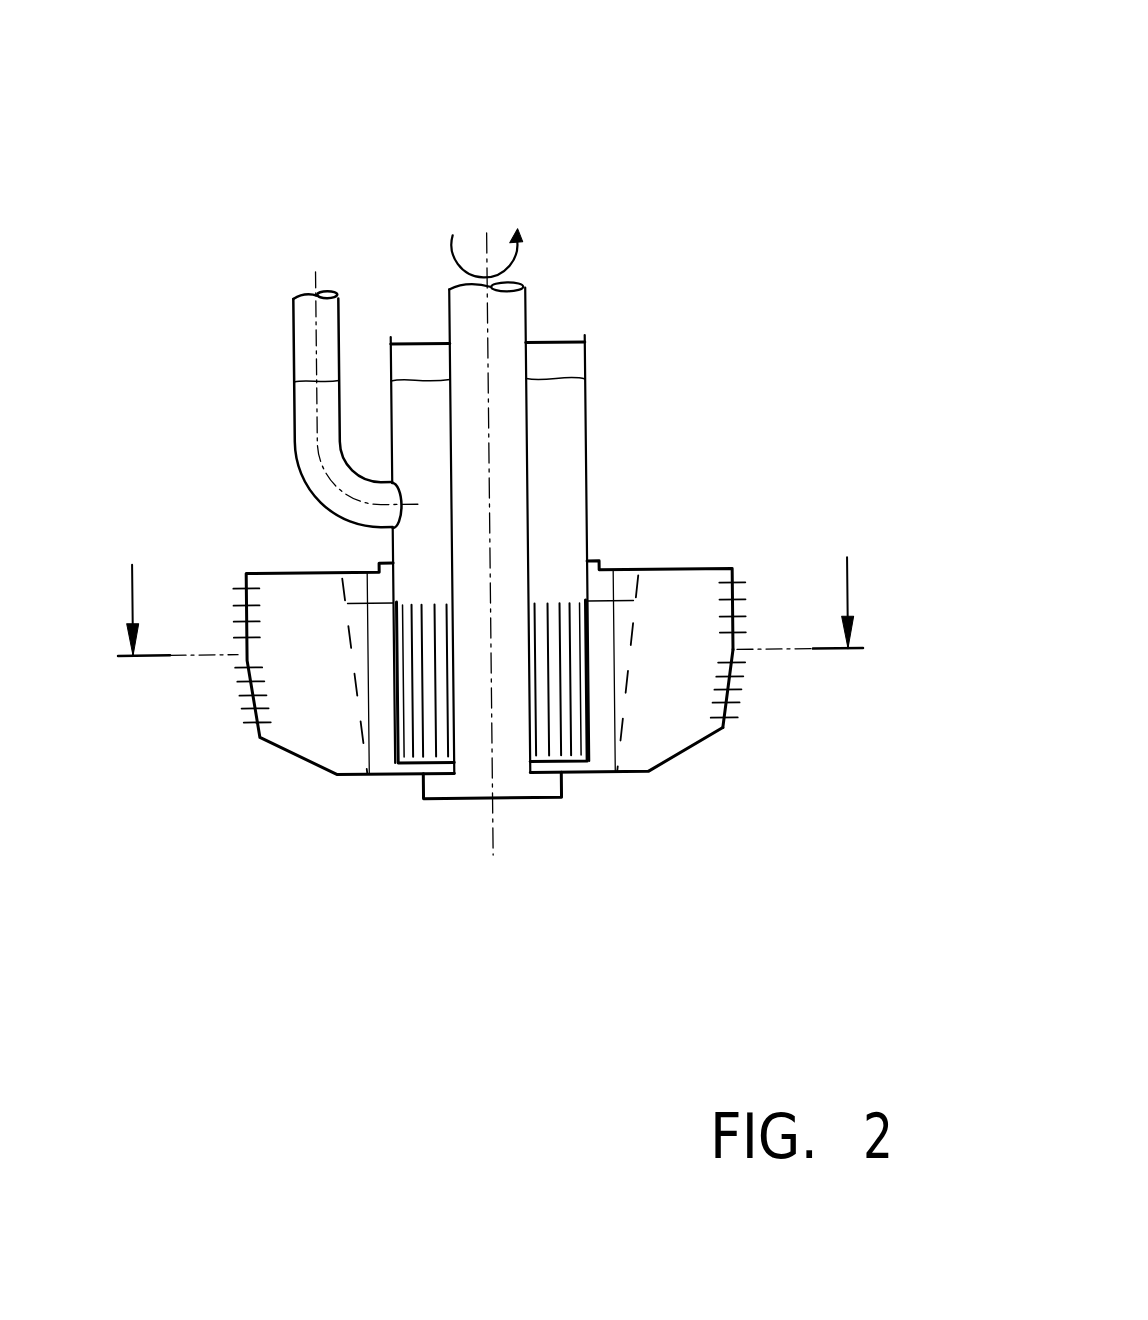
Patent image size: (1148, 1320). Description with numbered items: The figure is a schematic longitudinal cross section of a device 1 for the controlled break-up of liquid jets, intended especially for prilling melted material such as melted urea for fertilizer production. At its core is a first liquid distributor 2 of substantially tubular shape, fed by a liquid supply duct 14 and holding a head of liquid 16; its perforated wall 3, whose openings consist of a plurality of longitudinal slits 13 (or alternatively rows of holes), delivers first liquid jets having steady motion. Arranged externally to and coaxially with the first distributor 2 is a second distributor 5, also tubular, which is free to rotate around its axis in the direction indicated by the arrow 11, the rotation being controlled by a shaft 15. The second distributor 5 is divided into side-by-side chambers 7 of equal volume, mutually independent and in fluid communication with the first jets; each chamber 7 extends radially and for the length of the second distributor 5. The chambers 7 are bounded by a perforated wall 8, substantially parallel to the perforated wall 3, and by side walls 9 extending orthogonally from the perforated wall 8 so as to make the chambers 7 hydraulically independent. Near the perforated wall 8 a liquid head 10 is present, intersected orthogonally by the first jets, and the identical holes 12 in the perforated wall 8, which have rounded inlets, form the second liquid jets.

The device for the controlled break-up of liquid jets 1 is at (868, 136).
The first liquid distributor 2 is at (589, 484).
The perforated wall 3 is at (560, 767).
The second distributor 5 is at (682, 759).
The chambers 7 is at (288, 678).
The perforated wall 8 is at (740, 596).
The side walls 9 is at (370, 687).
The liquid head 10 is at (357, 694).
The arrow 11 is at (524, 260).
The holes 12 is at (734, 706).
The longitudinal slits 13 is at (412, 773).
The liquid supply duct 14 is at (310, 321).
The shaft 15 is at (527, 313).
The head of liquid 16 is at (586, 363).